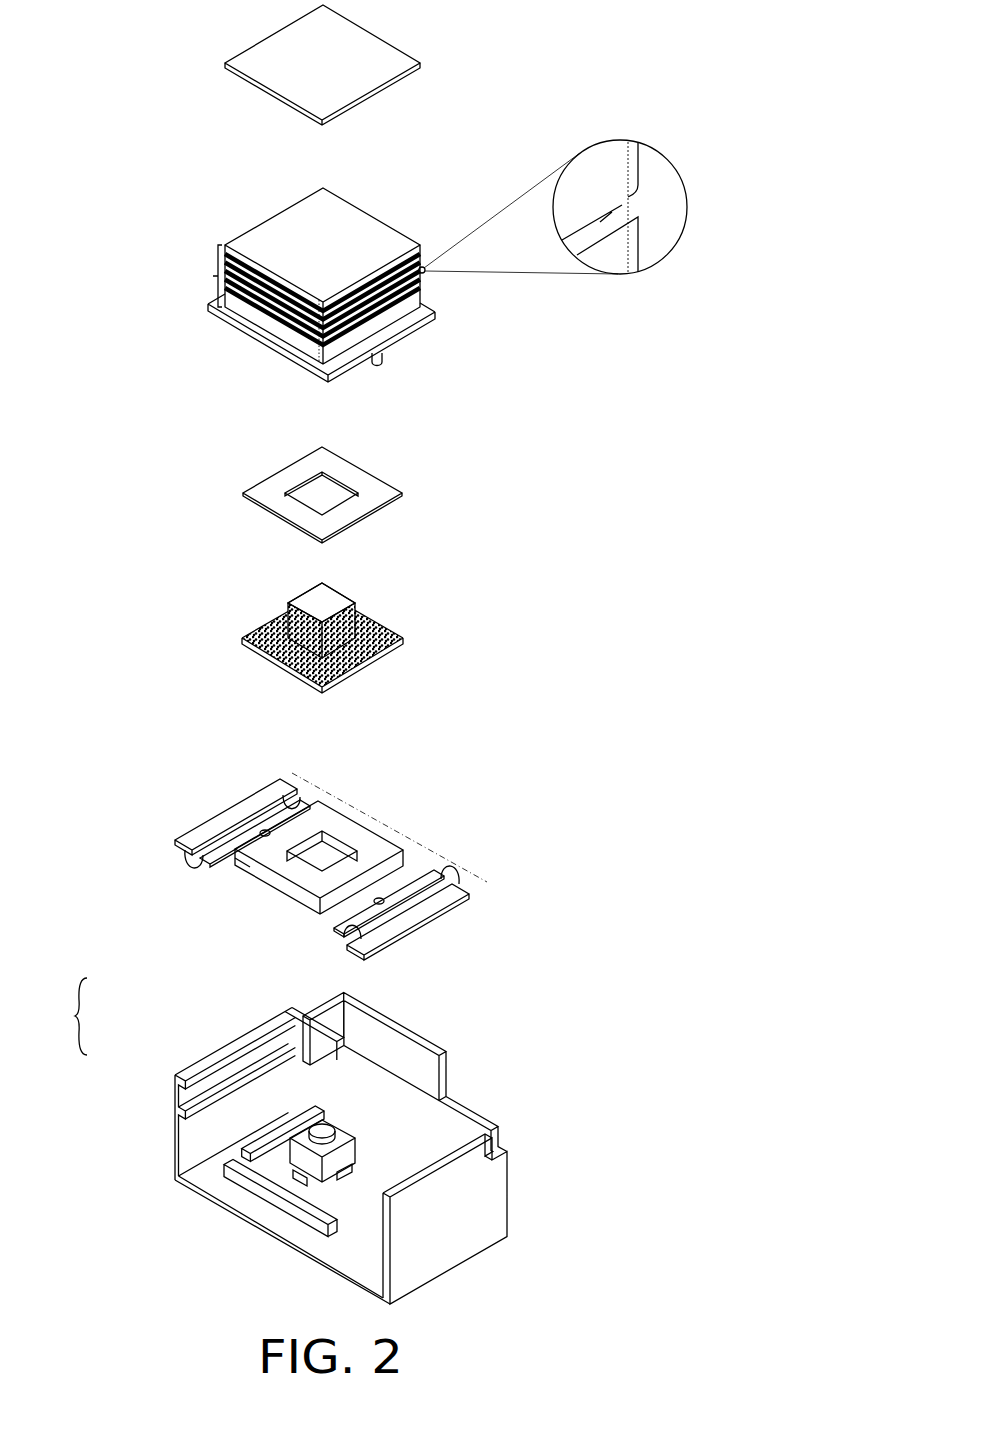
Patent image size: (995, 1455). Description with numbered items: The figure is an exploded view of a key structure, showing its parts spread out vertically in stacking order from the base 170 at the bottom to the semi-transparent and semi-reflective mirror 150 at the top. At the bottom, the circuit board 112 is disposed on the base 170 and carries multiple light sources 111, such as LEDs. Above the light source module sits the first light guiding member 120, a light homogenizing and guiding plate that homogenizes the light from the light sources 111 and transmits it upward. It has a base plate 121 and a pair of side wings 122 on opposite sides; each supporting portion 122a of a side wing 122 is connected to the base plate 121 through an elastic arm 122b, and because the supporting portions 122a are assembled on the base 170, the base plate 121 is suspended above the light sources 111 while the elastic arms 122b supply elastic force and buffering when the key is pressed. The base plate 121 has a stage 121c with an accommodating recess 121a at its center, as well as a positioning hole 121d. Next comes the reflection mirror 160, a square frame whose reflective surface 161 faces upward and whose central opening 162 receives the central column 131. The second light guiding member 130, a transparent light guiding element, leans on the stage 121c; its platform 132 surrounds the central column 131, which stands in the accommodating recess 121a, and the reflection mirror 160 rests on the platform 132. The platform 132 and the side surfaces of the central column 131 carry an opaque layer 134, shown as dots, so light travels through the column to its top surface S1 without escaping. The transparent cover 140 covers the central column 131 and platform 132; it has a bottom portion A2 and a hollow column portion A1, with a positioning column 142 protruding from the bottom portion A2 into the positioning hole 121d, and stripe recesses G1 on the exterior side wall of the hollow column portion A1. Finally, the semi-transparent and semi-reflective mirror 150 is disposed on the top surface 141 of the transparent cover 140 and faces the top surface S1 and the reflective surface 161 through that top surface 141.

The semi-transparent and semi-reflective mirror 150 is at (378, 33).
The transparent cover 140 is at (436, 279).
The top surface 141 is at (284, 228).
The positioning column 142 is at (385, 363).
The hollow column portion A1 is at (202, 276).
The bottom portion A2 is at (208, 304).
The stripe recess G1 is at (642, 202).
The reflection mirror 160 is at (354, 475).
The reflective surface 161 is at (362, 462).
The central opening 162 is at (320, 482).
The second light guiding member 130 is at (350, 626).
The central column 131 is at (337, 603).
The platform 132 is at (307, 655).
The opaque layer 134 is at (243, 632).
The top surface S1 is at (321, 590).
The first light guiding member 120 is at (362, 862).
The base plate 121 is at (301, 884).
The accommodating recess 121a is at (300, 862).
The stage 121c is at (257, 857).
The positioning hole 121d is at (263, 830).
The side wing 122 is at (327, 862).
The supporting portion 122a is at (227, 815).
The elastic arm 122b is at (292, 800).
The light source 111 is at (270, 1170).
The circuit board 112 is at (290, 1176).
The base 170 is at (332, 1141).